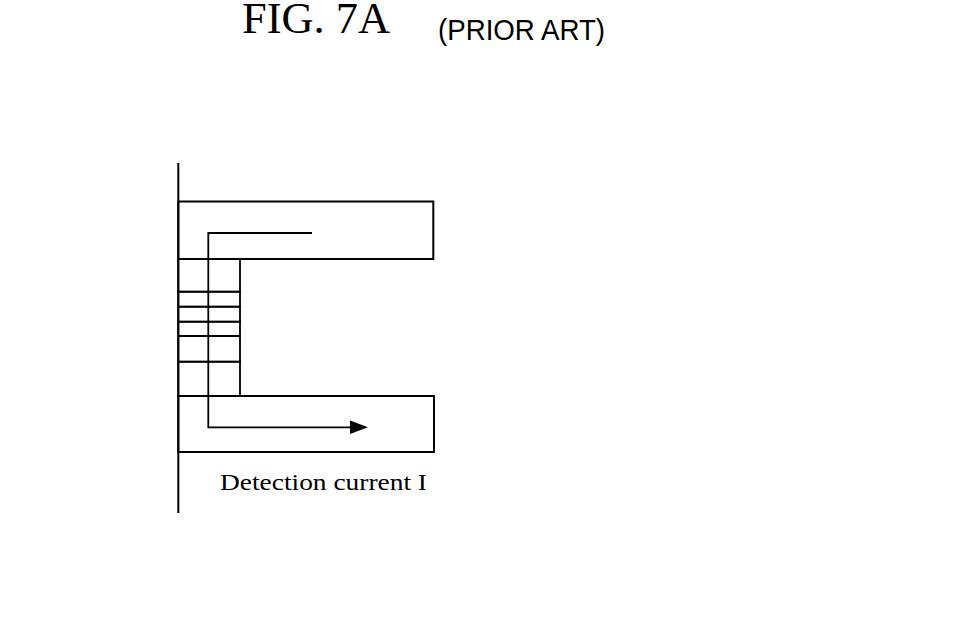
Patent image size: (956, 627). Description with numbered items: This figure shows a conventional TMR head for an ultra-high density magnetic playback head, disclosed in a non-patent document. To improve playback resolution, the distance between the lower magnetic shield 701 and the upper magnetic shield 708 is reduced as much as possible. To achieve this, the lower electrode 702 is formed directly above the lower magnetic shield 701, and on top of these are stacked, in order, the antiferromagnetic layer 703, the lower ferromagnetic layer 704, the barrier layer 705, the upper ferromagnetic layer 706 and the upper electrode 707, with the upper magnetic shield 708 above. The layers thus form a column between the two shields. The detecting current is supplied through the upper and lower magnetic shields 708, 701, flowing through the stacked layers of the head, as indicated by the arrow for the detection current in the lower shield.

The lower magnetic shield 701 is at (412, 426).
The lower electrode 702 is at (198, 377).
The antiferromagnetic layer 703 is at (198, 348).
The lower ferromagnetic layer 704 is at (193, 332).
The barrier layer 705 is at (192, 312).
The upper ferromagnetic layer 706 is at (191, 305).
The upper electrode 707 is at (187, 277).
The upper magnetic shield 708 is at (403, 231).